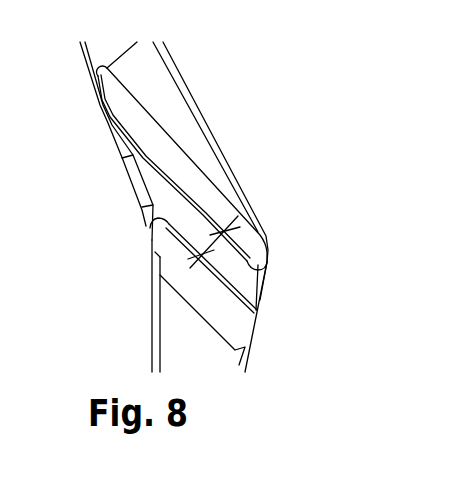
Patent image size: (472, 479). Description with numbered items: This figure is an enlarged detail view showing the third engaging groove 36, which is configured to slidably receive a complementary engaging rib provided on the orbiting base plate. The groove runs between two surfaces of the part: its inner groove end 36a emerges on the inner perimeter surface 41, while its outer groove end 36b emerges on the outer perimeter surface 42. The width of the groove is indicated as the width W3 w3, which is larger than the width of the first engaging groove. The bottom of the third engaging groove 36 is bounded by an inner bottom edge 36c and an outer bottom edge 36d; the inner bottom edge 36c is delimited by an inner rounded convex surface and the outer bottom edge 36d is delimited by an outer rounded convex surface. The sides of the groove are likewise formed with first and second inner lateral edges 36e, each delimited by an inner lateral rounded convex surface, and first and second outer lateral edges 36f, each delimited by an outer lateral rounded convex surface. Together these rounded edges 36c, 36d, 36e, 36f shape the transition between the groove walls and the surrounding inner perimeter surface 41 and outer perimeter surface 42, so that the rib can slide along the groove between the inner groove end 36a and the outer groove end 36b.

The third engaging groove 36 is at (188, 217).
The inner groove end 36a is at (123, 175).
The outer groove end 36b is at (276, 267).
The inner bottom edge 36c is at (150, 211).
The outer bottom edge 36d is at (258, 280).
The first and second inner lateral edge 36e is at (108, 125).
The first and second outer lateral edge 36f is at (269, 258).
The inner perimeter surface 41 is at (150, 333).
The outer perimeter surface 42 is at (255, 333).
The width W3 w3 is at (214, 245).